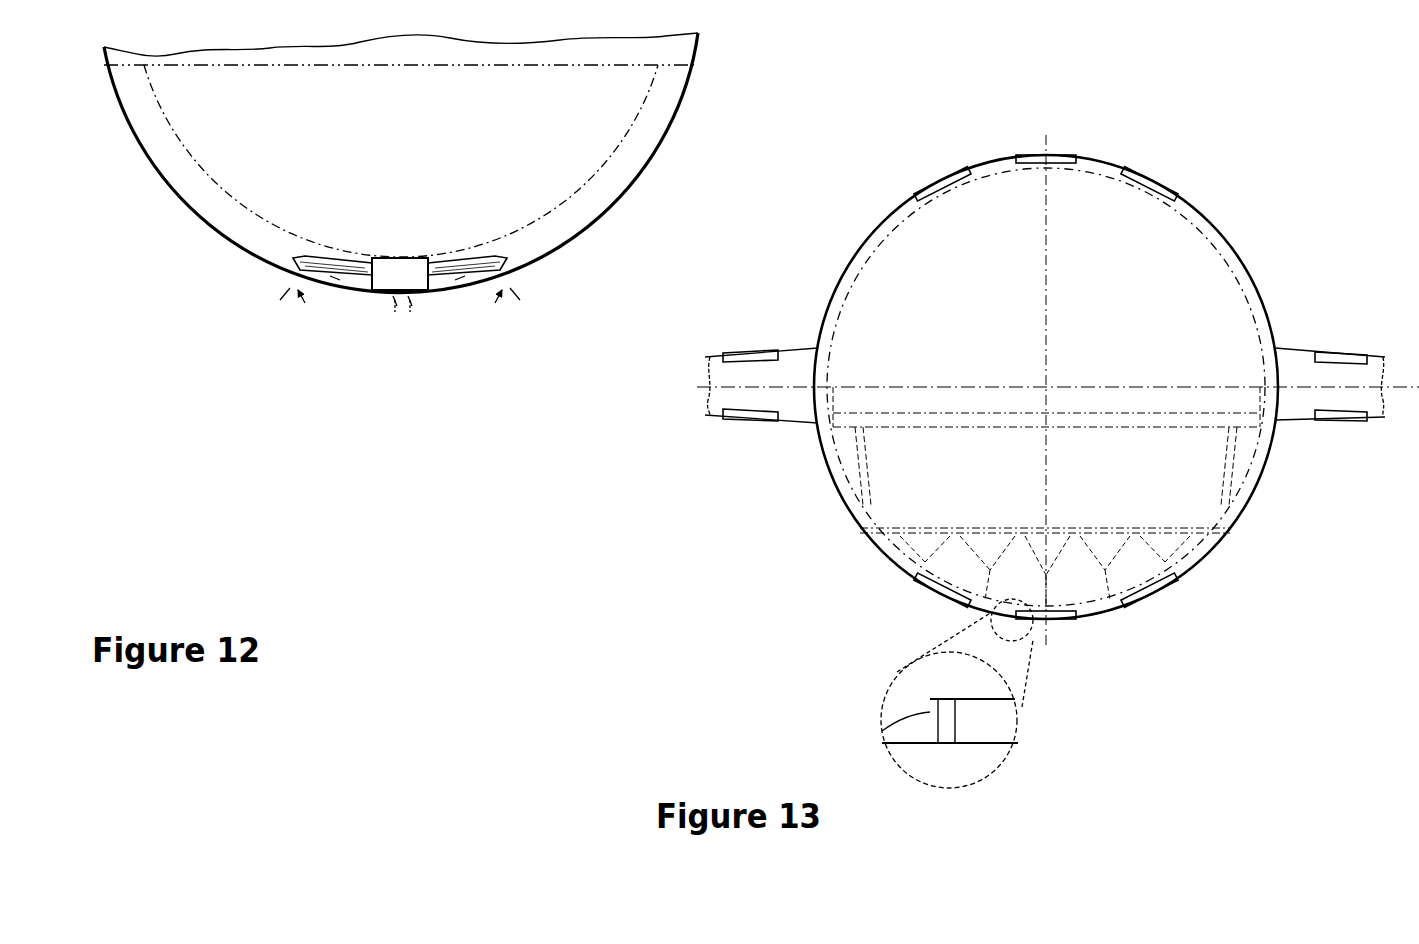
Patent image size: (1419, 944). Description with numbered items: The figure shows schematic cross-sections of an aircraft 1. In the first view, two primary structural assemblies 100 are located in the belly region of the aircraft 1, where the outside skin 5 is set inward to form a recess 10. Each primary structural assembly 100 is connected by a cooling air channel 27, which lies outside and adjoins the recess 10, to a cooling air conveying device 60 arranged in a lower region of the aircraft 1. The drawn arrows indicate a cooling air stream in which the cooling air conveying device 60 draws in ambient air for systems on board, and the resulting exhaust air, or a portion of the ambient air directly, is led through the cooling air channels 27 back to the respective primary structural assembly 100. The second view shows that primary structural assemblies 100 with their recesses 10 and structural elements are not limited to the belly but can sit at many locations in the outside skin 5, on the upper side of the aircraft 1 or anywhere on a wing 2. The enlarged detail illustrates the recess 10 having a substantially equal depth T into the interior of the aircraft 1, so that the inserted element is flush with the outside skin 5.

In FIG. 12, the aircraft 1 is at (100, 201).
In FIG. 13, the aircraft 1 is at (828, 332).
In FIG. 13, the wing 2 is at (718, 403).
In FIG. 12, the outside skin 5 is at (688, 98).
In FIG. 13, the outside skin 5 is at (877, 230).
In FIG. 13, the recess 10 is at (992, 724).
In FIG. 12, the cooling air channel 27 is at (336, 287).
In FIG. 12, the cooling air conveying device 60 is at (382, 283).
In FIG. 12, the primary structural assembly 100 is at (297, 295).
In FIG. 13, the depth T is at (877, 732).